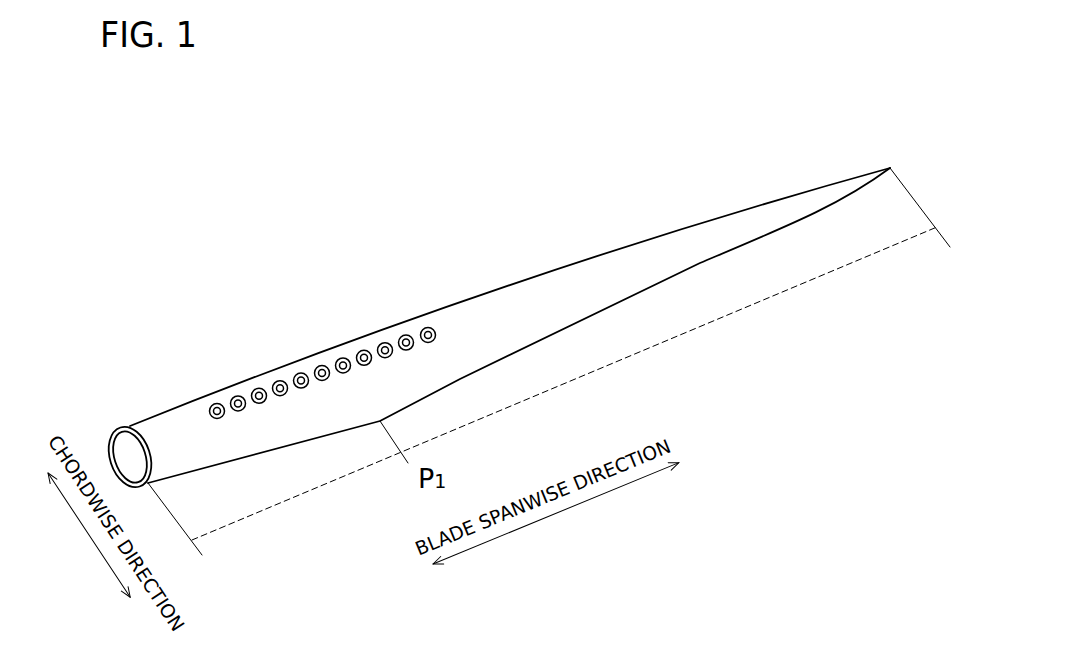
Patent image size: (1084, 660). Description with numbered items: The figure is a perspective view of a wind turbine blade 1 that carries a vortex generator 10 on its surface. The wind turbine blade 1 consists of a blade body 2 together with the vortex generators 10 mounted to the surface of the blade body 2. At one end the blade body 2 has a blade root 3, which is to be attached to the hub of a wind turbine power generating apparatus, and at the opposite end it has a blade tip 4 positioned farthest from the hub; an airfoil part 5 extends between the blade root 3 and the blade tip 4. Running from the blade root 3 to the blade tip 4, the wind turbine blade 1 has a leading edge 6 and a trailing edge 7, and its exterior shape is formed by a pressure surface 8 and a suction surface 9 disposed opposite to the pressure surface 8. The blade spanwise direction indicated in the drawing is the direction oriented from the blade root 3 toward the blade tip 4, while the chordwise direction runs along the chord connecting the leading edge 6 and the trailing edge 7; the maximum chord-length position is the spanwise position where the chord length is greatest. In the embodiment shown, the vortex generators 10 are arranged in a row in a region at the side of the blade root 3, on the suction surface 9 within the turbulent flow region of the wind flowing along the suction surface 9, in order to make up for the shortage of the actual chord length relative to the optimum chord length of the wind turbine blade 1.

The wind turbine blade 1 is at (265, 255).
The blade body 2 is at (535, 278).
The blade root 3 is at (110, 430).
The blade tip 4 is at (890, 168).
The airfoil part 5 is at (325, 343).
The leading edge 6 is at (478, 292).
The trailing edge 7 is at (528, 346).
The pressure surface 8 is at (206, 440).
The suction surface 9 is at (246, 425).
The vortex generator 10 is at (238, 398).